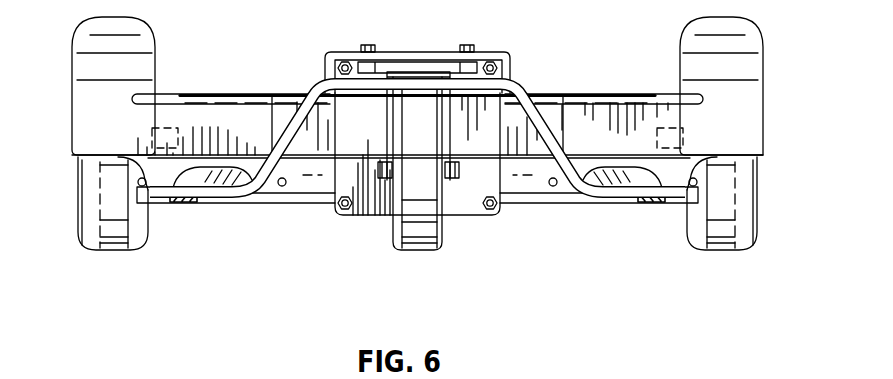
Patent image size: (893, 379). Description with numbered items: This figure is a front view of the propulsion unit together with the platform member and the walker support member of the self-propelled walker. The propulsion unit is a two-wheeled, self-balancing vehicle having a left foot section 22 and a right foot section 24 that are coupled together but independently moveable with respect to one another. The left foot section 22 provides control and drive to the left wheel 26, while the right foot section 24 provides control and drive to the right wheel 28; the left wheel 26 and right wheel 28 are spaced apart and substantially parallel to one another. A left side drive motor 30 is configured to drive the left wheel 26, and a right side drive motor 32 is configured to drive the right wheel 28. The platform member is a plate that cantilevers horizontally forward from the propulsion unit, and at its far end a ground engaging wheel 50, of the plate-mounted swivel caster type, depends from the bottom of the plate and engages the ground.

The left foot section 22 is at (574, 96).
The right foot section 24 is at (229, 96).
The left wheel 26 is at (722, 252).
The right wheel 28 is at (113, 252).
The left side drive motor 30 is at (685, 145).
The right side drive motor 32 is at (150, 145).
The ground engaging wheel 50 is at (417, 252).